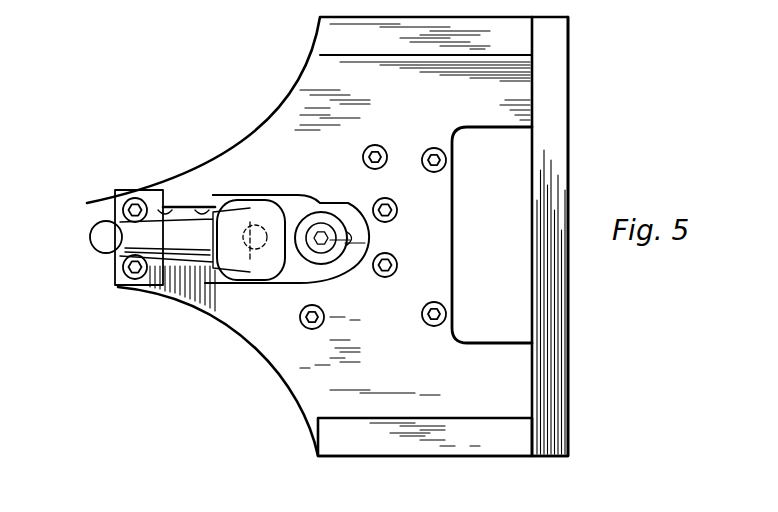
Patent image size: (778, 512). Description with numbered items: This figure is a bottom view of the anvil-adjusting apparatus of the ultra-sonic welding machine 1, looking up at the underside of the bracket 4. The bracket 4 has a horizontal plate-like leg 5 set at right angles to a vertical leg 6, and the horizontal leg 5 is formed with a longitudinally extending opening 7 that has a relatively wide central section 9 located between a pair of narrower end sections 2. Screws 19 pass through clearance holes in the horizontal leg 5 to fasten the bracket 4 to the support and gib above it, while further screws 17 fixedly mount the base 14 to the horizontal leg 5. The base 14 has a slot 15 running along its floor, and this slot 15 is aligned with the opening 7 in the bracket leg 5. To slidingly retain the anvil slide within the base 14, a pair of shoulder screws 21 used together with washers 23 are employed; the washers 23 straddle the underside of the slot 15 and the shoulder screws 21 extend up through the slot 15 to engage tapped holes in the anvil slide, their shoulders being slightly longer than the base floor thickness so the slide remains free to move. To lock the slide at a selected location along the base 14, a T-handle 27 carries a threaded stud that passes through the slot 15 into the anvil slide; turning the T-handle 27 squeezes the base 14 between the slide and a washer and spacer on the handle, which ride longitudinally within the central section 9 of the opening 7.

The ultra-sonic welding machine 1 is at (100, 177).
The narrower end sections 2 is at (165, 207).
The bracket 4 is at (587, 51).
The horizontal plate-like leg 5 is at (497, 370).
The vertical leg 6 is at (548, 143).
The longitudinally extending opening 7 is at (300, 198).
The central section 9 is at (212, 207).
The base 14 is at (308, 272).
The slot 15 is at (158, 290).
The screws 17 is at (121, 206).
The screws 19 is at (431, 149).
The shoulder screws 21 is at (324, 232).
The washers 23 is at (311, 198).
The T-handle 27 is at (250, 200).